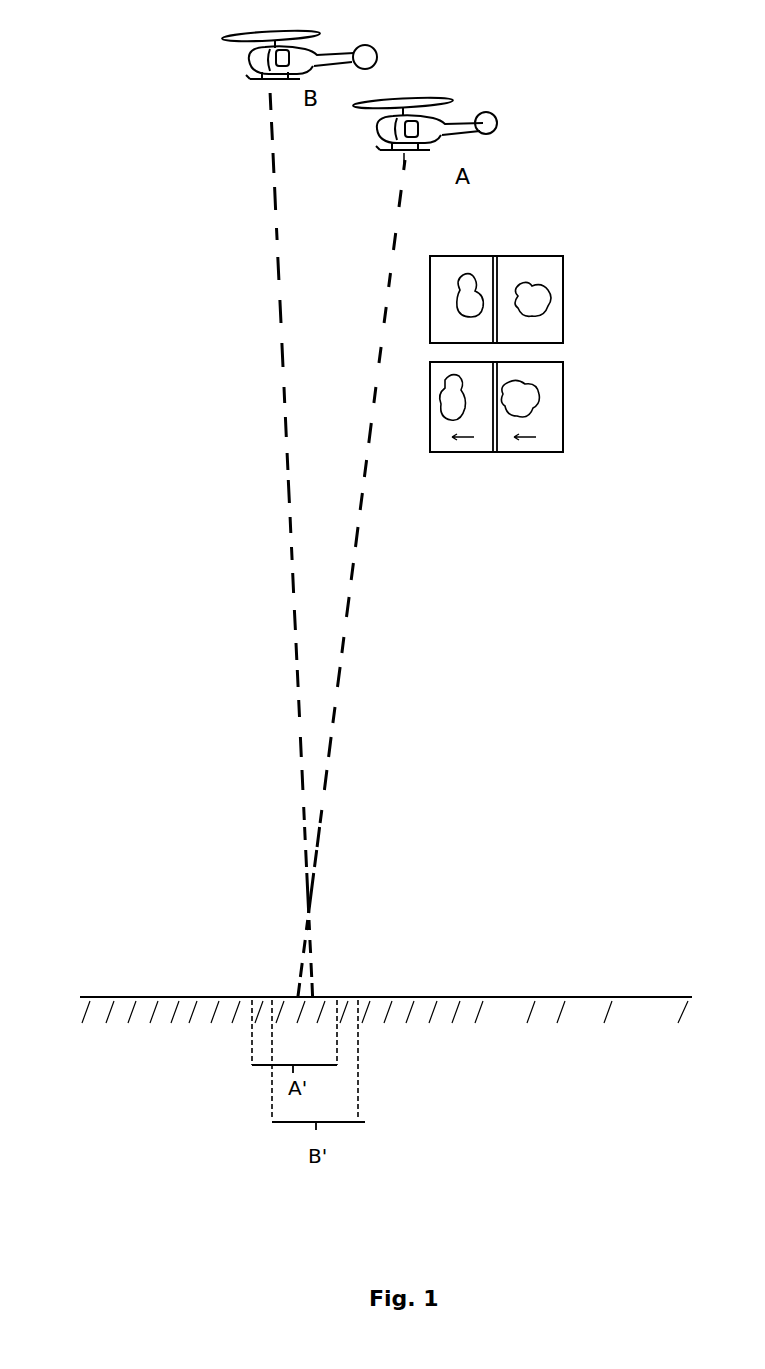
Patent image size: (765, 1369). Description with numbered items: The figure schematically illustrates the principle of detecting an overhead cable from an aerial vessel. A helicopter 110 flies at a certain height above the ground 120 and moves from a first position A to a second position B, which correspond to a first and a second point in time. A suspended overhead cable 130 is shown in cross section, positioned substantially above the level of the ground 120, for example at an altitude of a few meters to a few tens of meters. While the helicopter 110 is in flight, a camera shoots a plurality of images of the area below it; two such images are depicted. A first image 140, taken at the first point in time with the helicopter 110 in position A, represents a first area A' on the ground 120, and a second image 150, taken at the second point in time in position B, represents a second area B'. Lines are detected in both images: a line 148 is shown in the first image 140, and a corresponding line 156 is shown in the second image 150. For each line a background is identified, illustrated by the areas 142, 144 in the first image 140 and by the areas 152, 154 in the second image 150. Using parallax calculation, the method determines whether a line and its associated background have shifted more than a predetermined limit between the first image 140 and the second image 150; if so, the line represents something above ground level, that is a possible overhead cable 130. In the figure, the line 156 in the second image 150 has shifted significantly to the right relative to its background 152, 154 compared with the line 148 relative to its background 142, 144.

The helicopter 110 is at (249, 56).
The ground 120 is at (92, 995).
The overhead cable 130 is at (341, 895).
The first image 140 is at (563, 325).
The background area 142 is at (477, 290).
The background area 144 is at (540, 285).
The line 148 is at (497, 262).
The second image 150 is at (563, 446).
The background area 152 is at (432, 420).
The background area 154 is at (535, 410).
The frame boundary of second image 156 is at (498, 452).